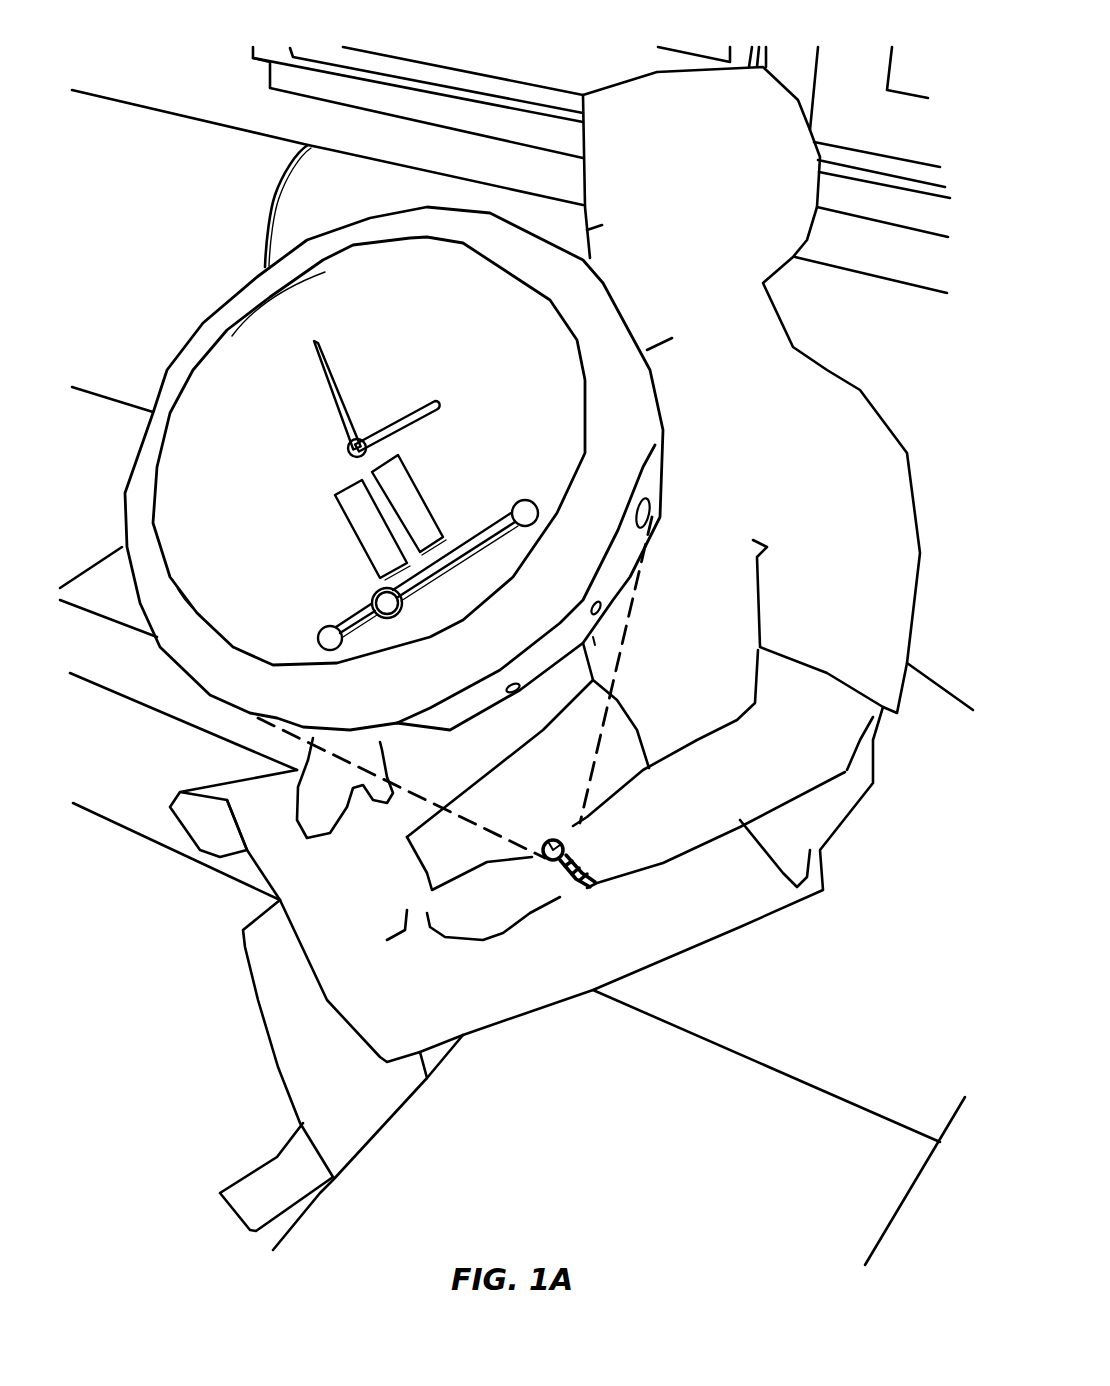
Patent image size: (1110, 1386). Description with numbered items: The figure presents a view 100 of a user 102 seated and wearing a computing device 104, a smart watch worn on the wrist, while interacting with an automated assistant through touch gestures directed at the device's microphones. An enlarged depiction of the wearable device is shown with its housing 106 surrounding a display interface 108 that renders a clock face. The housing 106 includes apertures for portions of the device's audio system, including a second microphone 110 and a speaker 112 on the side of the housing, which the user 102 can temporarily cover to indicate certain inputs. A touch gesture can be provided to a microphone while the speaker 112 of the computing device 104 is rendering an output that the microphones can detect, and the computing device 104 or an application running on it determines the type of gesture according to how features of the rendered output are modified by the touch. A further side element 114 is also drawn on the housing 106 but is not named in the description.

The view 100 is at (178, 76).
The user 102 is at (523, 666).
The computing device 104 is at (557, 836).
The housing 106 is at (394, 468).
The display interface 108 is at (197, 248).
The second microphone 110 is at (590, 612).
The speaker 112 is at (633, 523).
The side button / sensor 114 is at (510, 686).